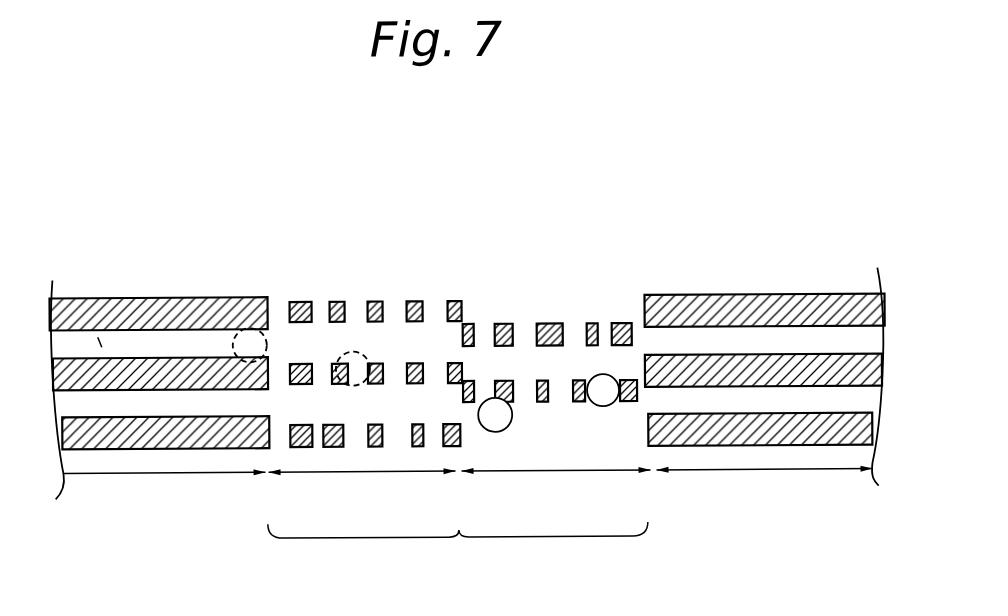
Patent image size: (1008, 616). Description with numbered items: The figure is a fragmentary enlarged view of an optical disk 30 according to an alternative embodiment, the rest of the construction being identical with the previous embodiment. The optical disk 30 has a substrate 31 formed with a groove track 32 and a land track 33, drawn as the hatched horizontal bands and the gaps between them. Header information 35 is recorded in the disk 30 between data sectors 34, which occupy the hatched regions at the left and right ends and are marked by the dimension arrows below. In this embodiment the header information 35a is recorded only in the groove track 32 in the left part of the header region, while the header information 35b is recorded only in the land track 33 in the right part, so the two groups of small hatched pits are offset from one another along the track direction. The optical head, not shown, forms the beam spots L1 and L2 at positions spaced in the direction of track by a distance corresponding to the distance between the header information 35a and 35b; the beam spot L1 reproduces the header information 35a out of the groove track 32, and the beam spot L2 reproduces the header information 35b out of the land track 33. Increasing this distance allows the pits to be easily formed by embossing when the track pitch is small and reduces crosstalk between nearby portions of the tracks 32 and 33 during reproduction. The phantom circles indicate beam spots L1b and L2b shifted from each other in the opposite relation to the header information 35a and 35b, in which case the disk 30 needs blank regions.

The optical disk 30 is at (829, 221).
The substrate 31 is at (491, 221).
The groove track 32 is at (70, 298).
The land track 33 is at (140, 298).
The data sectors 34 is at (170, 477).
The header information 35 is at (458, 549).
The header information 35a is at (358, 473).
The header information 35b is at (545, 473).
The beam spot L1 is at (509, 400).
The beam spot L2 is at (606, 375).
The beam spot L1b is at (357, 351).
The beam spot L2b is at (262, 334).